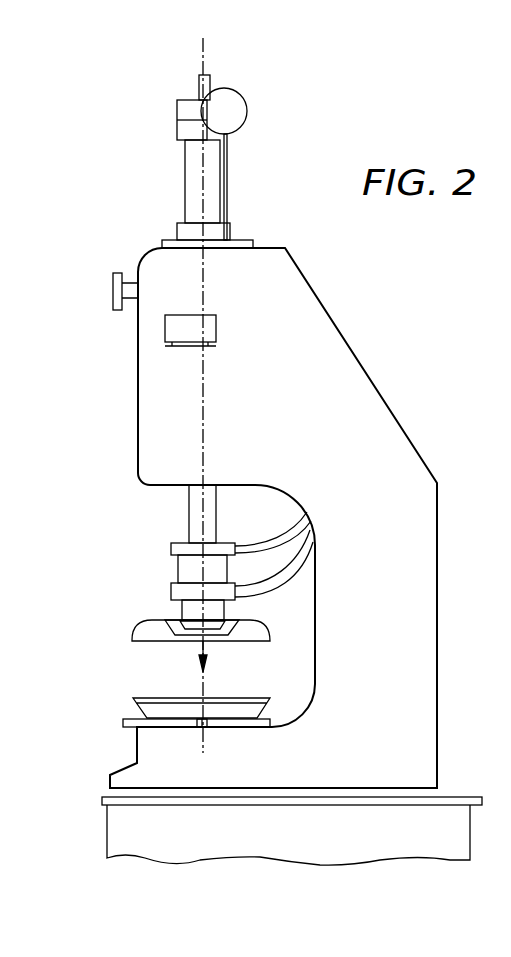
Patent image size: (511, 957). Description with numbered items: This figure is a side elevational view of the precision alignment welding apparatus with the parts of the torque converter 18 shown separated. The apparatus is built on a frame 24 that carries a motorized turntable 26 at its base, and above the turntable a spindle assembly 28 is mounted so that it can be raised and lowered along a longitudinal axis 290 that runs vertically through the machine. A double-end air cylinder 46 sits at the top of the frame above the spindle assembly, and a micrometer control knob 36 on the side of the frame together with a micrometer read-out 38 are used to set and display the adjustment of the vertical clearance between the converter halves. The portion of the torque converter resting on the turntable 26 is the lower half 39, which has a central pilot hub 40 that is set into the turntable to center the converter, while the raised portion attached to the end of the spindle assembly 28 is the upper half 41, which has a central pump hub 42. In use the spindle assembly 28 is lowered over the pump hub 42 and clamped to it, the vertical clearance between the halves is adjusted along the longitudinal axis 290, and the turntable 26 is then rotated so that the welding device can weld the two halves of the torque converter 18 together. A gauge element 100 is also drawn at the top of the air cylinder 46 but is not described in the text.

The torque converter 18 is at (199, 656).
The frame 24 is at (437, 588).
The turntable 26 is at (123, 722).
The spindle assembly 28 is at (183, 512).
The micrometer control knob 36 is at (113, 290).
The micrometer read-out 38 is at (216, 327).
The lower half 39 is at (258, 697).
The pilot hub 40 is at (207, 728).
The upper half 41 is at (270, 620).
The pump hub 42 is at (190, 618).
The double-end air cylinder 46 is at (187, 187).
The pressure gauge 100 is at (246, 107).
The longitudinal axis 290 is at (207, 58).